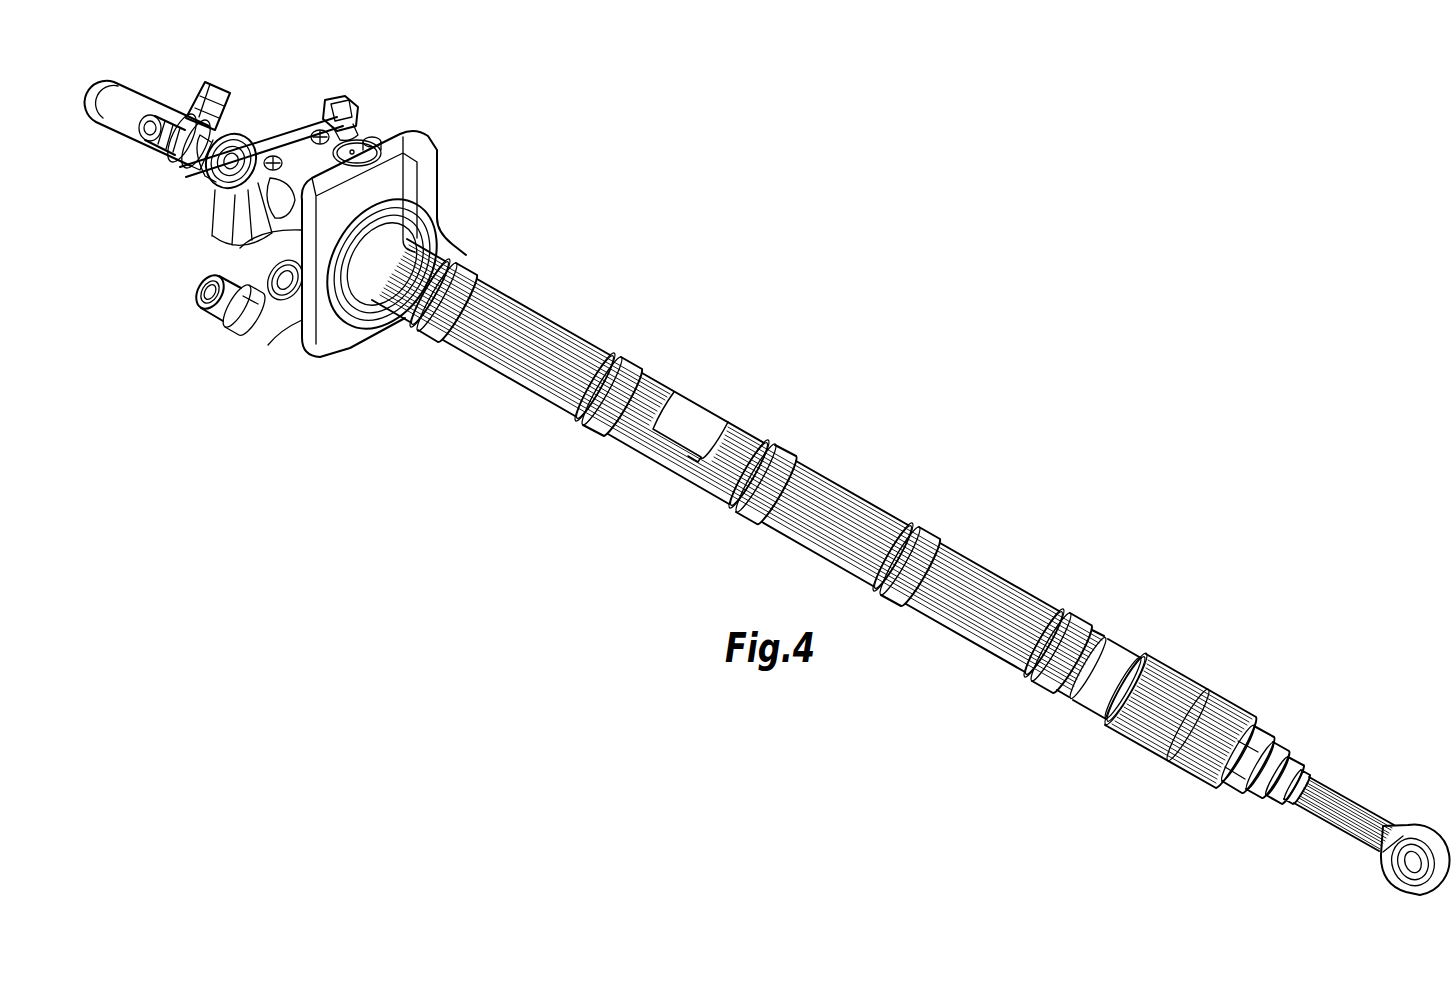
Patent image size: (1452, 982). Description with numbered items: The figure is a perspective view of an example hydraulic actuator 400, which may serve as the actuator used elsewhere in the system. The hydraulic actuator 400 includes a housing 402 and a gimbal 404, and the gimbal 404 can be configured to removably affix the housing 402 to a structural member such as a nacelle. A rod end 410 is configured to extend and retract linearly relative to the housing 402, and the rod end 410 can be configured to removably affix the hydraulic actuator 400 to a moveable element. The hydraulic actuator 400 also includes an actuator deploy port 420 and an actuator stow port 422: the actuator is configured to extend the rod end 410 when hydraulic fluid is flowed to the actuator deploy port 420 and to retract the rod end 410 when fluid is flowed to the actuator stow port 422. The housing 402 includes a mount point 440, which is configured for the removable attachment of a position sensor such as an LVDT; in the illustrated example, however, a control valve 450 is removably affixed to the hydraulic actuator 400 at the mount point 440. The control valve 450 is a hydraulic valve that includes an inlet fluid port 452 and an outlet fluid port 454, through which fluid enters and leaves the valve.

The hydraulic actuator 400 is at (735, 302).
The housing 402 is at (577, 338).
The gimbal 404 is at (298, 347).
The rod end 410 is at (1427, 827).
The actuator deploy port 420 is at (202, 312).
The actuator stow port 422 is at (350, 98).
The mount point 440 is at (237, 138).
The control valve 450 is at (103, 123).
The inlet fluid port 452 is at (128, 138).
The outlet fluid port 454 is at (222, 82).